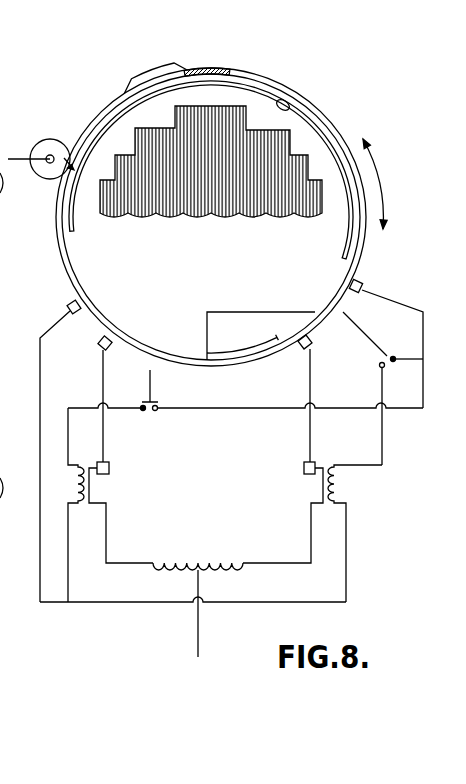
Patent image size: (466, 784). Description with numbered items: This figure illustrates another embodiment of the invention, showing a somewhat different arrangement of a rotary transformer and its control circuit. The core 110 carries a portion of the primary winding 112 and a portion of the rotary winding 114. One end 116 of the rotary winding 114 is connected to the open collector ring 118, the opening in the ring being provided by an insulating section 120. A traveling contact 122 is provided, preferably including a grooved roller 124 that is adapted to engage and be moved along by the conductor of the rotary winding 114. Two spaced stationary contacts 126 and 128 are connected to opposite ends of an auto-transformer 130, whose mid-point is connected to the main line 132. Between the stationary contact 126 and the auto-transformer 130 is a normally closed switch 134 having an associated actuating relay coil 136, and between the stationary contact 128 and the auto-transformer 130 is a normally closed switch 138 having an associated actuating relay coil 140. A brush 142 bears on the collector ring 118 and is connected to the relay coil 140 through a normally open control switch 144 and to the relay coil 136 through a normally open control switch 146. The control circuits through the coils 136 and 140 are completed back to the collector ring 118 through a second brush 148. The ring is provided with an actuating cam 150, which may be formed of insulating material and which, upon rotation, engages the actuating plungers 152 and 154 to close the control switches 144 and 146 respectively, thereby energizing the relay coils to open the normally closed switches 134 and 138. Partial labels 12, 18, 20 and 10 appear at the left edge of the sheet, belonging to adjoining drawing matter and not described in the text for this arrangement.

The core 110 is at (296, 168).
The primary winding 112 is at (288, 103).
The rotary winding 114 is at (323, 132).
The end of rotary winding 116 is at (262, 310).
The open collector ring 118 is at (364, 245).
The insulating section 120 is at (199, 68).
The traveling contact 122 is at (18, 158).
The grooved roller 124 is at (53, 139).
The stationary contact 126 is at (100, 348).
The stationary contact 128 is at (300, 352).
The auto-transformer 130 is at (227, 549).
The main line 132 is at (197, 628).
The normally closed switch 134 is at (110, 470).
The actuating relay coil 136 is at (72, 475).
The normally closed switch 138 is at (316, 460).
The actuating relay coil 140 is at (343, 485).
The brush 142 is at (366, 282).
The normally open control switch 144 is at (399, 346).
The normally open control switch 146 is at (161, 399).
The brush 148 is at (70, 306).
The actuating cam 150 is at (151, 67).
The actuating plunger 152 is at (373, 334).
The actuating plunger 154 is at (150, 381).
The housing 12 is at (9, 209).
The member 18 is at (0, 343).
The member 20 is at (15, 490).
The apparatus 10 is at (11, 542).